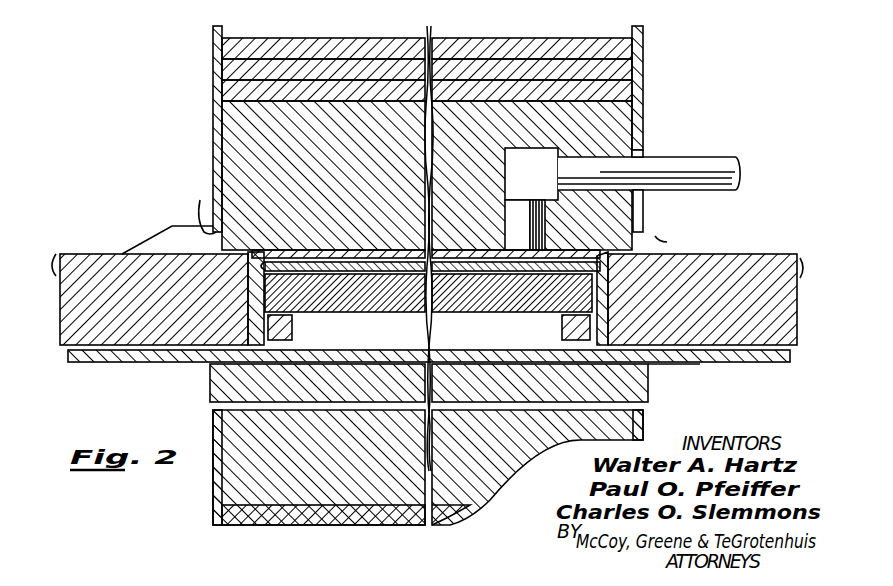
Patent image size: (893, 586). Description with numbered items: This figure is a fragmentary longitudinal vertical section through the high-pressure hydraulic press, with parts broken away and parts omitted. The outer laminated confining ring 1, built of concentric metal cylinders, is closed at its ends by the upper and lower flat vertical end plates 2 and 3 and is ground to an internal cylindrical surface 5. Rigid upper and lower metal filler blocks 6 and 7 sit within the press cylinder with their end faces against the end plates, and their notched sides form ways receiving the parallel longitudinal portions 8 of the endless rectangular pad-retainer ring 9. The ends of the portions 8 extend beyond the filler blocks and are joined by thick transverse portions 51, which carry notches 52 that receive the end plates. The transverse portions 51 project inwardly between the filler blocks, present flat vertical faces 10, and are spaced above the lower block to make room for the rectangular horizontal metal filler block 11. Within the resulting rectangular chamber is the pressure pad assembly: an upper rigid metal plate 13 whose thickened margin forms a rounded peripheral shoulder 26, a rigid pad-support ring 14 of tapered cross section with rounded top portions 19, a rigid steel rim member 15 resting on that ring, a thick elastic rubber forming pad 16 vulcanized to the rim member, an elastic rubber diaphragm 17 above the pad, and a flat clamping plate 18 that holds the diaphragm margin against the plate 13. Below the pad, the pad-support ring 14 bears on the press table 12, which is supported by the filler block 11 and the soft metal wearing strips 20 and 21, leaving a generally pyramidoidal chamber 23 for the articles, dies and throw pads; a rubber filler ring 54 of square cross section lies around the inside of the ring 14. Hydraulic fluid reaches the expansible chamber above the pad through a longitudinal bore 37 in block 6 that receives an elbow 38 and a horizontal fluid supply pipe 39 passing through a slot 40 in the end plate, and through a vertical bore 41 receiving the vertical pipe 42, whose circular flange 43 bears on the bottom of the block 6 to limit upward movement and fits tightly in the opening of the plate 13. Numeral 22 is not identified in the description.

The outer laminated confining ring 1 is at (318, 46).
The upper flat vertical end plate 2 is at (210, 130).
The lower flat vertical end plate 3 is at (214, 474).
The internal cylindrical surface 5 is at (298, 104).
The upper filler block 6 is at (339, 194).
The lower filler block 7 is at (352, 467).
The longitudinal portions 8 is at (166, 228).
The pad-retainer ring 9 is at (86, 254).
The flat vertical faces 10 is at (248, 328).
The horizontal filler block 11 is at (362, 400).
The press table 12 is at (790, 370).
The upper rigid metal plate 13 is at (351, 246).
The pad-support ring 14 is at (622, 320).
The rim member 15 is at (632, 278).
The forming pad 16 is at (507, 333).
The diaphragm 17 is at (289, 249).
The clamping plate 18 is at (450, 228).
The rounded top portions 19 is at (248, 304).
The upper soft metal wearing strip 20 is at (540, 383).
The lower soft metal wearing strip 21 is at (537, 467).
The space 22 is at (334, 326).
The pyramidoidal chamber 23 is at (402, 324).
The rounded peripheral shoulder 26 is at (592, 254).
The longitudinal cylindrical bore 37 is at (640, 150).
The elbow 38 is at (536, 160).
The fluid supply pipe 39 is at (720, 158).
The slot 40 is at (644, 206).
The vertical cylindrical bore 41 is at (504, 195).
The vertical pipe 42 is at (546, 210).
The circular flange 43 is at (430, 287).
The transverse portions 51 is at (429, 251).
The notches 52 is at (714, 228).
The rubber filler ring 54 is at (292, 326).